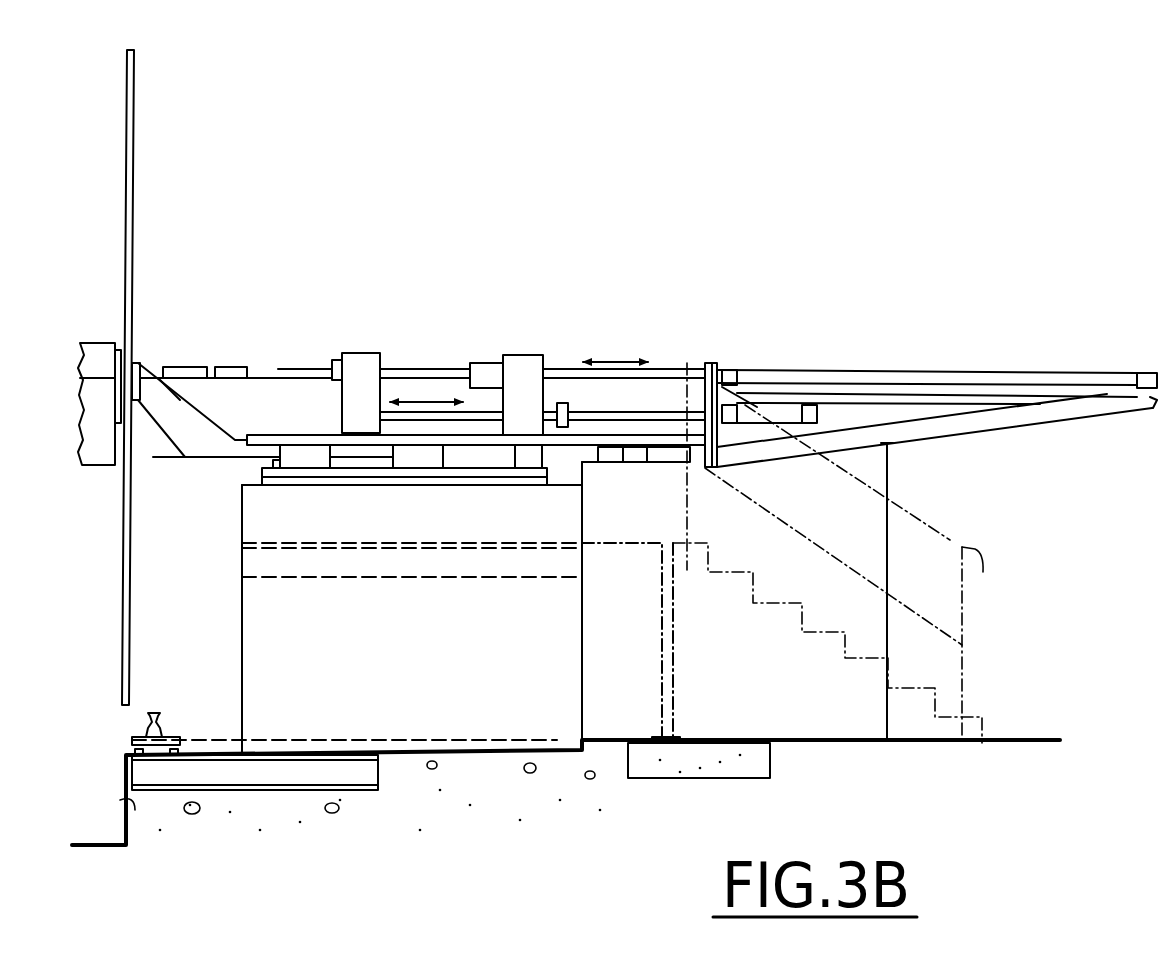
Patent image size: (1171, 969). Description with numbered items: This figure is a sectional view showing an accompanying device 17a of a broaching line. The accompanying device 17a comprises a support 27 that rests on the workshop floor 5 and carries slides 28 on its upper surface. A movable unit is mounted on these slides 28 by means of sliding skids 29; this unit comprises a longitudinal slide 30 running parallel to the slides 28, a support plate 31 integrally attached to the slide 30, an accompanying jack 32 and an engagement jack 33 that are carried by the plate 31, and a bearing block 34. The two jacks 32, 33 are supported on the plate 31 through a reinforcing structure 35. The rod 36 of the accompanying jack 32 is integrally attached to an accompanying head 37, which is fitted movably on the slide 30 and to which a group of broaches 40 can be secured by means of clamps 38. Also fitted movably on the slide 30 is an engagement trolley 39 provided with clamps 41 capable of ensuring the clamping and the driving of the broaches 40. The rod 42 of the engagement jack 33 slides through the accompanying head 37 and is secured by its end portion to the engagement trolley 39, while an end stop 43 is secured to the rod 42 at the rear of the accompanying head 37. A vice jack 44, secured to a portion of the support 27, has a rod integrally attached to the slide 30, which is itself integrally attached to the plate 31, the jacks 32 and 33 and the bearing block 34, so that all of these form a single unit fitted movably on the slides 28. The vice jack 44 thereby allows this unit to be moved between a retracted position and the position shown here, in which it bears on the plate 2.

The plate 2 is at (129, 172).
The workshop floor 5 is at (566, 779).
The accompanying device 17a is at (836, 238).
The support 27 is at (406, 608).
The slides 28 is at (383, 478).
The sliding skids 29 is at (300, 455).
The longitudinal slide 30 is at (290, 437).
The support plate 31 is at (717, 437).
The accompanying jack 32 is at (812, 373).
The engagement jack 33 is at (778, 412).
The bearing block 34 is at (172, 432).
The reinforcing structure 35 is at (1063, 410).
The rod of the accompanying jack 36 is at (568, 376).
The accompanying head 37 is at (530, 357).
The clamps 38 is at (490, 365).
The engagement trolley 39 is at (358, 367).
The broaches 40 is at (417, 370).
The clamps 41 is at (333, 362).
The rod of the engagement jack 42 is at (472, 417).
The end stop 43 is at (563, 428).
The vice jack 44 is at (603, 462).